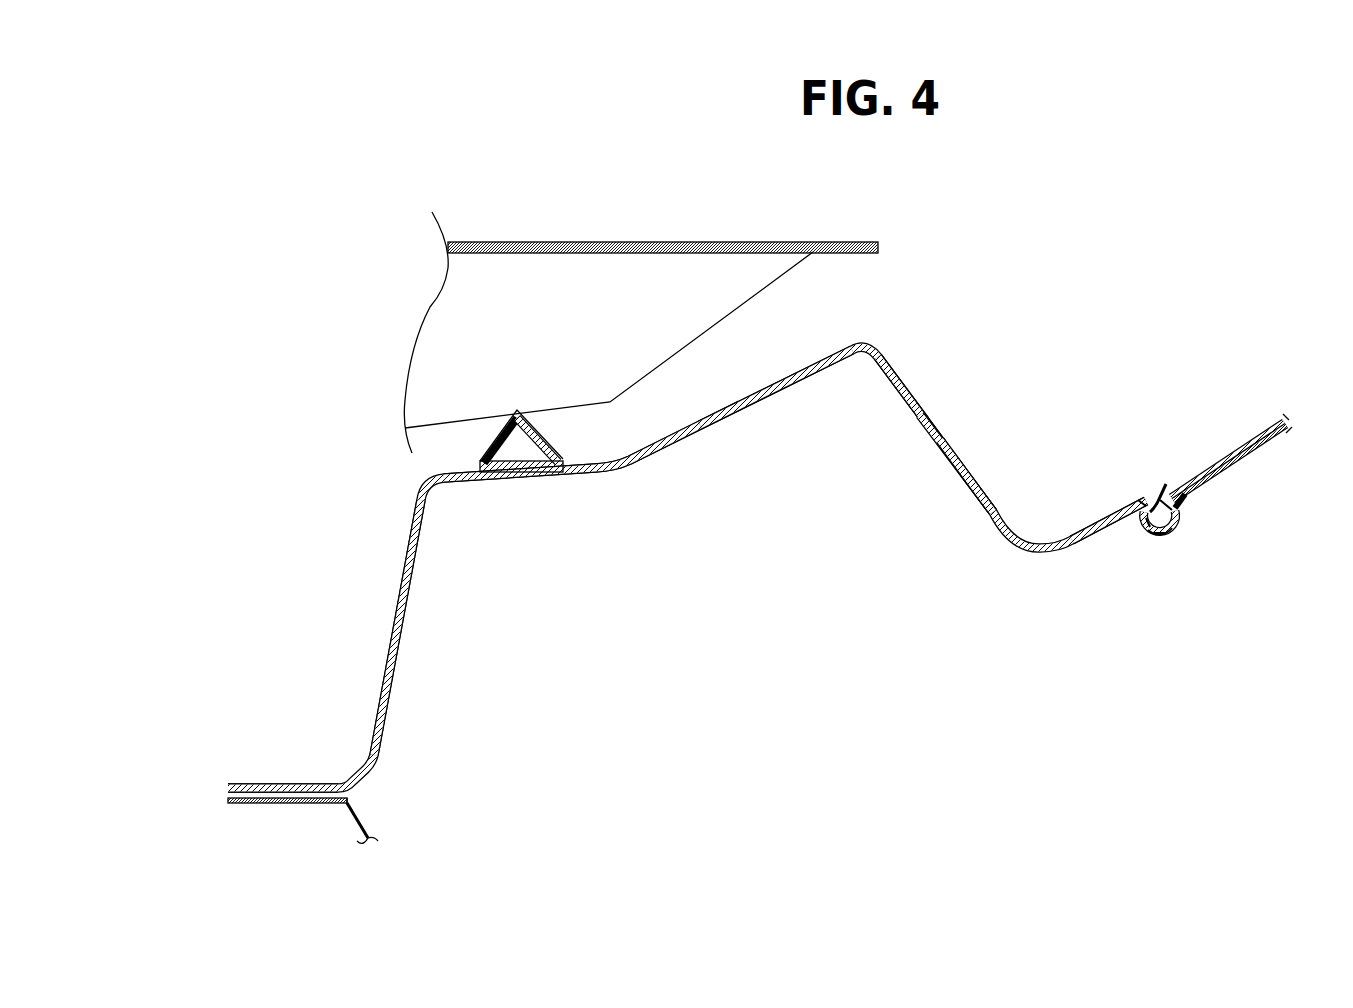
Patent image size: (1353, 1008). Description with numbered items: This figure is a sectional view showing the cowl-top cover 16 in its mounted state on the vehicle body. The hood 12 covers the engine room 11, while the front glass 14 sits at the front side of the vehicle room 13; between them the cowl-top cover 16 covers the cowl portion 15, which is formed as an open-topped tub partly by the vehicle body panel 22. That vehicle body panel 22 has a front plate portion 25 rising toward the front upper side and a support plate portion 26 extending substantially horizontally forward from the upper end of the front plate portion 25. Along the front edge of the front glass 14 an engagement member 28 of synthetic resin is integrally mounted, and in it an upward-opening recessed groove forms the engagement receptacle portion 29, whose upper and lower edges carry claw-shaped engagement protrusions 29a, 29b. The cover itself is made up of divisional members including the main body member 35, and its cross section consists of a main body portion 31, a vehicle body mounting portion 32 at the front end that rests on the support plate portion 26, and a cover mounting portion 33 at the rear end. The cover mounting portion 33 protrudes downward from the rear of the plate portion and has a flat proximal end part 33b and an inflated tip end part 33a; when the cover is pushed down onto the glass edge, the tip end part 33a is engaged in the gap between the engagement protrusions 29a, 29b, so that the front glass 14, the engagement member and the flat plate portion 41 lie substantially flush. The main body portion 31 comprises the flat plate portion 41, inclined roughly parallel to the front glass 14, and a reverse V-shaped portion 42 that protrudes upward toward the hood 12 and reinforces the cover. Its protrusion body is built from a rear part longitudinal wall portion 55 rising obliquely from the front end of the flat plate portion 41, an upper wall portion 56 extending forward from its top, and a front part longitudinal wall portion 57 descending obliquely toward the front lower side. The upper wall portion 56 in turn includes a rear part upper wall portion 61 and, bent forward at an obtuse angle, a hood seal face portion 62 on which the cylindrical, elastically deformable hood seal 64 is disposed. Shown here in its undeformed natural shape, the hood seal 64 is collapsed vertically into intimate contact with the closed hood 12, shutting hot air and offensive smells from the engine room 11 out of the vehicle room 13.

The engine room 11 is at (318, 650).
The hood 12 is at (763, 242).
The vehicle room 13 is at (1290, 477).
The front glass 14 is at (1247, 435).
The cowl portion 15 is at (992, 623).
The cowl-top cover 16 is at (938, 338).
The vehicle body panel 22 is at (370, 835).
The front plate portion 25 is at (352, 808).
The support plate portion 26 is at (292, 804).
The engagement member 28 is at (1178, 527).
The engagement receptacle portion 29 is at (1172, 537).
The engagement protrusion 29a is at (1165, 487).
The engagement protrusion 29b is at (1147, 520).
The main body portion 31 is at (947, 438).
The vehicle body mounting portion 32 is at (292, 783).
The cover mounting portion 33 is at (1178, 513).
The tip end part 33a is at (1160, 538).
The proximal end part 33b is at (1137, 498).
The main body member 35 is at (912, 392).
The flat plate portion 41 is at (1078, 533).
The reverse V-shaped portion 42 is at (950, 463).
The rear part longitudinal wall portion 55 is at (983, 488).
The upper wall portion 56 is at (700, 437).
The front part longitudinal wall portion 57 is at (407, 567).
The rear part upper wall portion 61 is at (768, 395).
The hood seal face portion 62 is at (492, 483).
The hood seal 64 is at (537, 408).